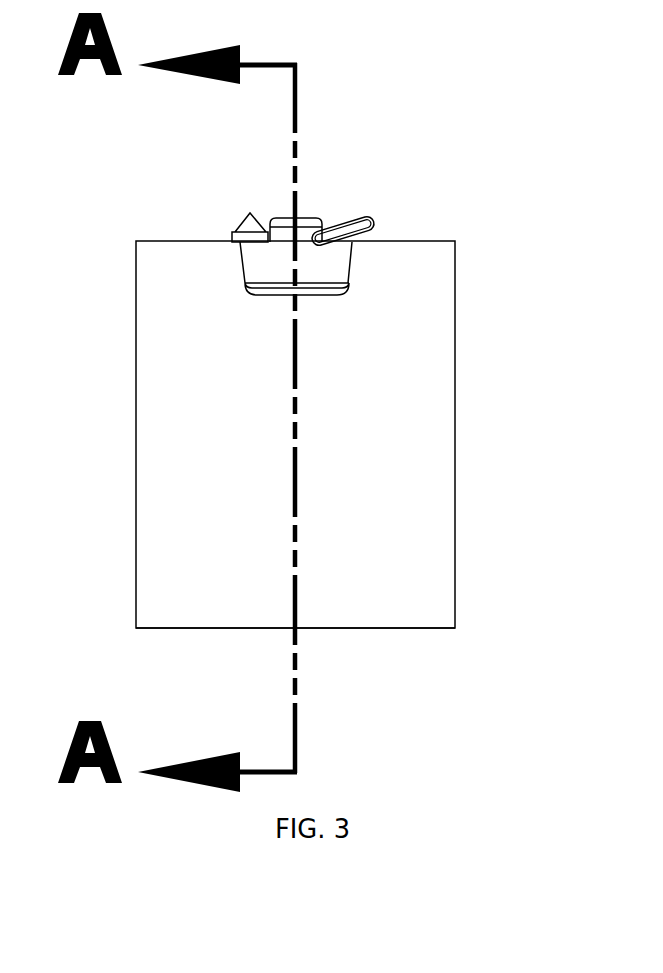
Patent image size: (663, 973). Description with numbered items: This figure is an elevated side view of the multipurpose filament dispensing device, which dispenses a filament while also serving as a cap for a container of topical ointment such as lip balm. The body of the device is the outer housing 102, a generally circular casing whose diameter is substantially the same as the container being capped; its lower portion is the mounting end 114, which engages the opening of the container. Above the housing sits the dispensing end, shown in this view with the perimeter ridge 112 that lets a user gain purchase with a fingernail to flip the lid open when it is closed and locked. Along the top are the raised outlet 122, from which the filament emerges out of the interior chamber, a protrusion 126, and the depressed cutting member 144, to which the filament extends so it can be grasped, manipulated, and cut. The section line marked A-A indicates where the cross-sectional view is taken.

The outer housing 102 is at (455, 429).
The mounting end 114 is at (414, 627).
The perimeter ridge 112 is at (262, 263).
The protrusion 126 is at (243, 225).
The raised outlet 122 is at (308, 220).
The cutting member 144 is at (355, 222).